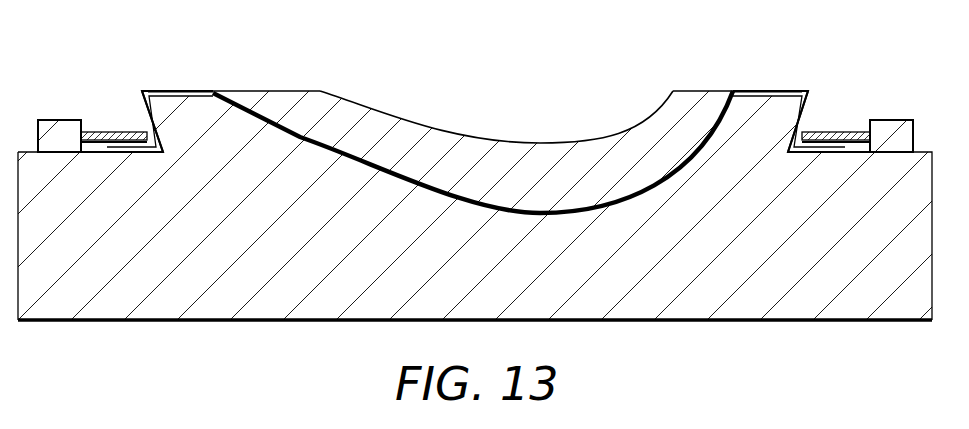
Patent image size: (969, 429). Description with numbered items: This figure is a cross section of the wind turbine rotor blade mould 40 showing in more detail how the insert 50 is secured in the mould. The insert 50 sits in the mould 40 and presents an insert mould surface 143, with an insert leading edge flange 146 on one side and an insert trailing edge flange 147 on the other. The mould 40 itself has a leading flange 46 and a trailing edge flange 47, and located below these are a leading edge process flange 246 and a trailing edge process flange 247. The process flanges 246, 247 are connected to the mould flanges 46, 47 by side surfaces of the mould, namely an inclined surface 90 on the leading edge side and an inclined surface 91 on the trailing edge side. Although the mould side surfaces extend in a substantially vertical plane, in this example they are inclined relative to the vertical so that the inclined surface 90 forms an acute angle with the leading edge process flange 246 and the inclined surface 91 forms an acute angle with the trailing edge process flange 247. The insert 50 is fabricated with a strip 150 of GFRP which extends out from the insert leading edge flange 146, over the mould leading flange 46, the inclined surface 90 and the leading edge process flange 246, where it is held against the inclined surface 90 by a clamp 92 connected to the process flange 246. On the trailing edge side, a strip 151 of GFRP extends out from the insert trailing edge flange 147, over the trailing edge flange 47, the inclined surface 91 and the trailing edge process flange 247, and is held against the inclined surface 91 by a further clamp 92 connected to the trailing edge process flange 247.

The mould 40 is at (116, 340).
The insert 50 is at (566, 158).
The insert mould surface 143 is at (455, 133).
The insert trailing edge flange 147 is at (277, 90).
The insert leading edge flange 146 is at (698, 90).
The trailing edge flange 47 is at (193, 90).
The leading flange 46 is at (757, 92).
The strip 151 is at (160, 90).
The strip 150 is at (802, 90).
The inclined surface 91 is at (158, 130).
The inclined surface 90 is at (792, 130).
The clamp 92 is at (105, 131).
The trailing edge process flange 247 is at (100, 153).
The leading edge process flange 246 is at (850, 153).